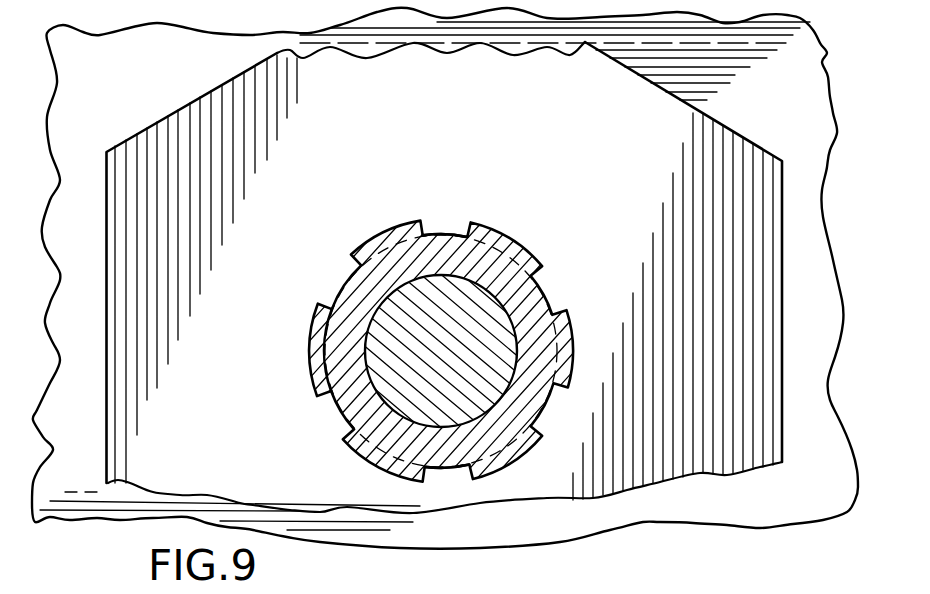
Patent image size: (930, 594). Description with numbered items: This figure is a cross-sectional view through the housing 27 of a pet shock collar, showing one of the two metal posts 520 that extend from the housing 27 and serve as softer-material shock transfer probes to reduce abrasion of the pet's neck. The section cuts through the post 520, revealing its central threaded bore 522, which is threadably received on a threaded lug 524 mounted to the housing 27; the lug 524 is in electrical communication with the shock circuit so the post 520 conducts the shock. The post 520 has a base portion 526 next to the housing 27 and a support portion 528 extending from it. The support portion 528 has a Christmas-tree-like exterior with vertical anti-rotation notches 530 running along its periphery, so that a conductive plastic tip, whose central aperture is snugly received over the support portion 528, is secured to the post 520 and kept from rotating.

The housing 27 is at (155, 81).
The metal post 520 is at (425, 324).
The central threaded bore 522 is at (352, 437).
The threaded lug 524 is at (488, 328).
The base portion 526 is at (143, 145).
The support portion 528 is at (370, 247).
The anti-rotation notch 530 is at (438, 227).